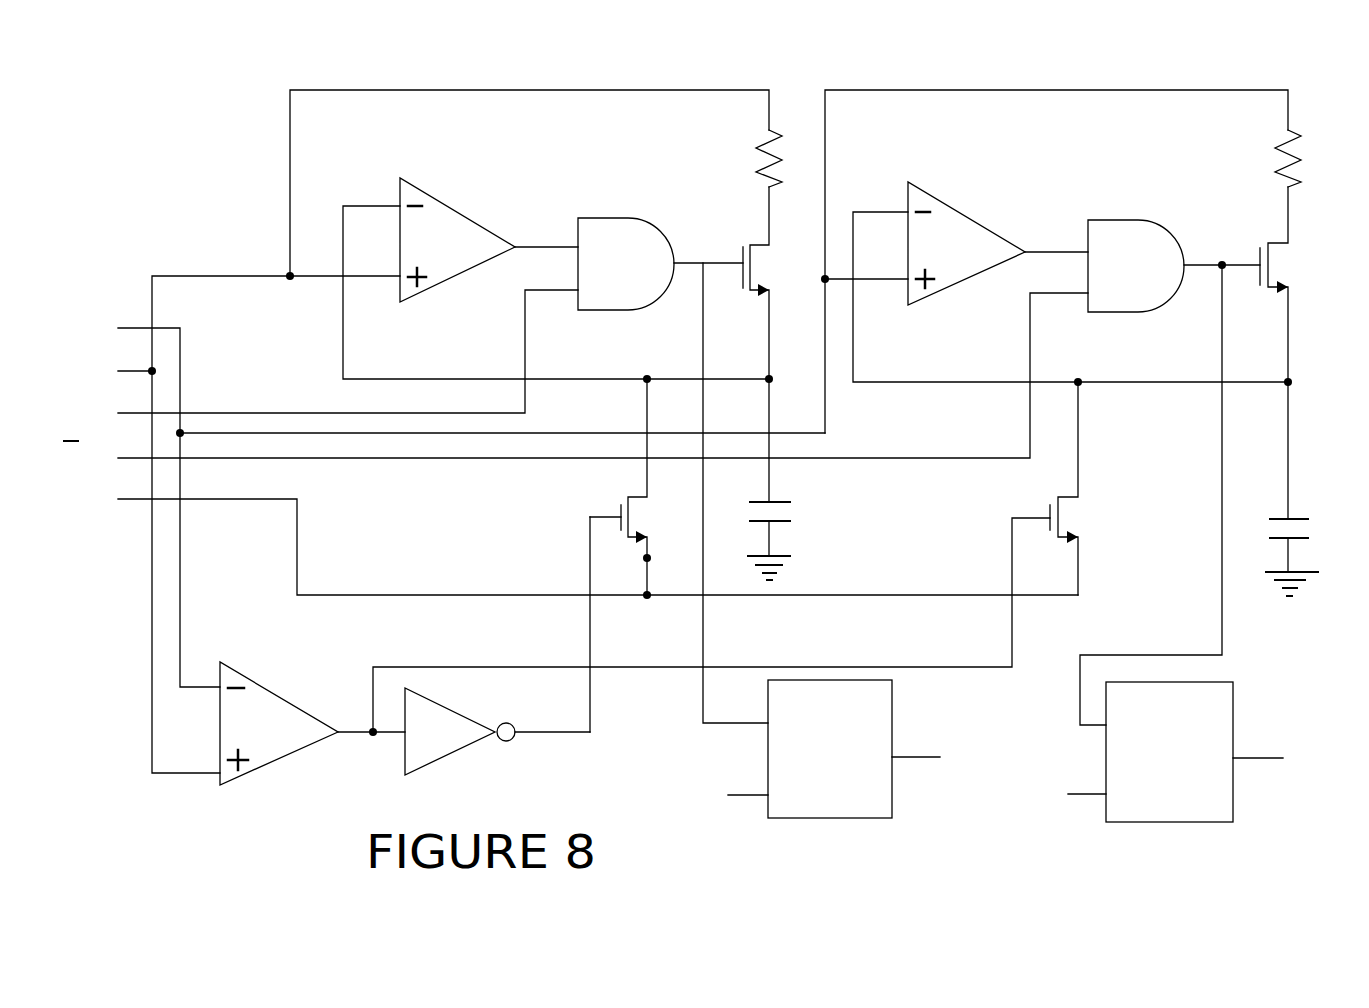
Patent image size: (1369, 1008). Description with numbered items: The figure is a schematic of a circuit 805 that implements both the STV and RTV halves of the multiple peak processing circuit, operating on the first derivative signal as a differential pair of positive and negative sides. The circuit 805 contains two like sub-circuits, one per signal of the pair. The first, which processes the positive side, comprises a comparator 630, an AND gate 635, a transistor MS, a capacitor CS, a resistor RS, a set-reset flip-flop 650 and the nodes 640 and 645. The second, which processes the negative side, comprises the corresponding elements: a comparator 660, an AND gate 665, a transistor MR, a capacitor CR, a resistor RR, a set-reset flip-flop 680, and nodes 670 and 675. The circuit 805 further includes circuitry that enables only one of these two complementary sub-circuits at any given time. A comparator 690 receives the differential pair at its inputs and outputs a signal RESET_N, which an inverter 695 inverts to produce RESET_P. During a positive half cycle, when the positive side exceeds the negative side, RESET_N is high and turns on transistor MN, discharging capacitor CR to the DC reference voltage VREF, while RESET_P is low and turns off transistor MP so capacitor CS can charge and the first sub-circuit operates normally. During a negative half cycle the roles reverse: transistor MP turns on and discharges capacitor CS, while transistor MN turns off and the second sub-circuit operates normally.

The circuit 805 is at (178, 145).
The comparator 630 is at (471, 256).
The AND gate 635 is at (646, 279).
The node 640 is at (708, 242).
The node 645 is at (745, 362).
The set-reset flip-flop 650 is at (863, 719).
The comparator 660 is at (978, 260).
The AND gate 665 is at (1155, 280).
The node 670 is at (1222, 245).
The node 675 is at (1319, 382).
The set-reset flip-flop 680 is at (1211, 719).
The comparator 690 is at (302, 744).
The inverter 695 is at (458, 748).